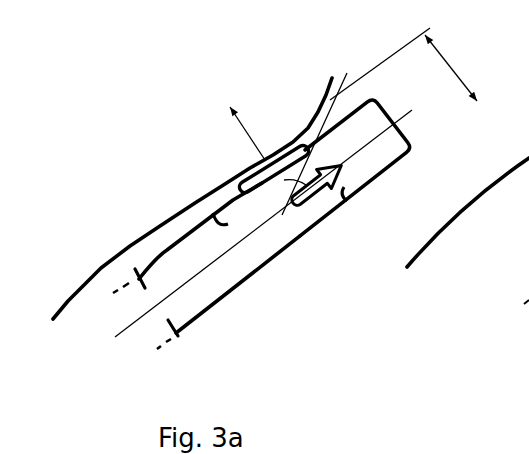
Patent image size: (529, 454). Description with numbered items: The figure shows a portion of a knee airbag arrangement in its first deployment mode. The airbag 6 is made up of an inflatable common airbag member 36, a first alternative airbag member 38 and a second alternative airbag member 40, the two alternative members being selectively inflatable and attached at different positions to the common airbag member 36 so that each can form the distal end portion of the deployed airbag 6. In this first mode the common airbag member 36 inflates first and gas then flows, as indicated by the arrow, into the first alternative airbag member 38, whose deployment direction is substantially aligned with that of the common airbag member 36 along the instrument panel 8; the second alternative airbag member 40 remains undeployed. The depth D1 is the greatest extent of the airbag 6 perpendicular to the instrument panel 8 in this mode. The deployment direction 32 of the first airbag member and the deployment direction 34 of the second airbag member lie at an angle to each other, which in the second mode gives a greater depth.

The airbag 6 is at (357, 233).
The instrument panel 8 is at (323, 91).
The deployment direction 32 is at (280, 216).
The deployment direction 34 is at (234, 121).
The common airbag member 36 is at (280, 213).
The first alternative airbag member 38 is at (370, 125).
The second alternative airbag member 40 is at (292, 165).
The depth D1 is at (403, 64).